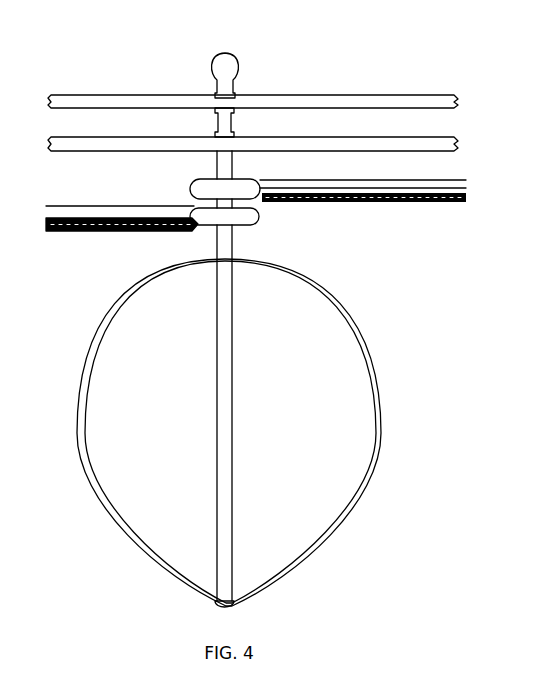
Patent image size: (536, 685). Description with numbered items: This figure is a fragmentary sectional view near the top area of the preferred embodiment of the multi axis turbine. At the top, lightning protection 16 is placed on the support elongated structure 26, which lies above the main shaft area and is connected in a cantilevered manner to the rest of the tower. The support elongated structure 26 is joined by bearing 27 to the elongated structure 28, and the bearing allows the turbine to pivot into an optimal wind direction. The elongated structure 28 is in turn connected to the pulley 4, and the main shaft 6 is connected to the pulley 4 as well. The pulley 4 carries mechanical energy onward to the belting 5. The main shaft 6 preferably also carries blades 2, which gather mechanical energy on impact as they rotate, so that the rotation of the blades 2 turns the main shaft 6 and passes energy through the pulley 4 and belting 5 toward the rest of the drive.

The blades 2 is at (344, 337).
The pulley 4 is at (186, 194).
The belting 5 is at (121, 214).
The main shaft 6 is at (229, 384).
The lightning protection 16 is at (235, 56).
The support elongated structure 26 is at (322, 108).
The bearing 27 is at (211, 91).
The elongated structure 28 is at (258, 222).